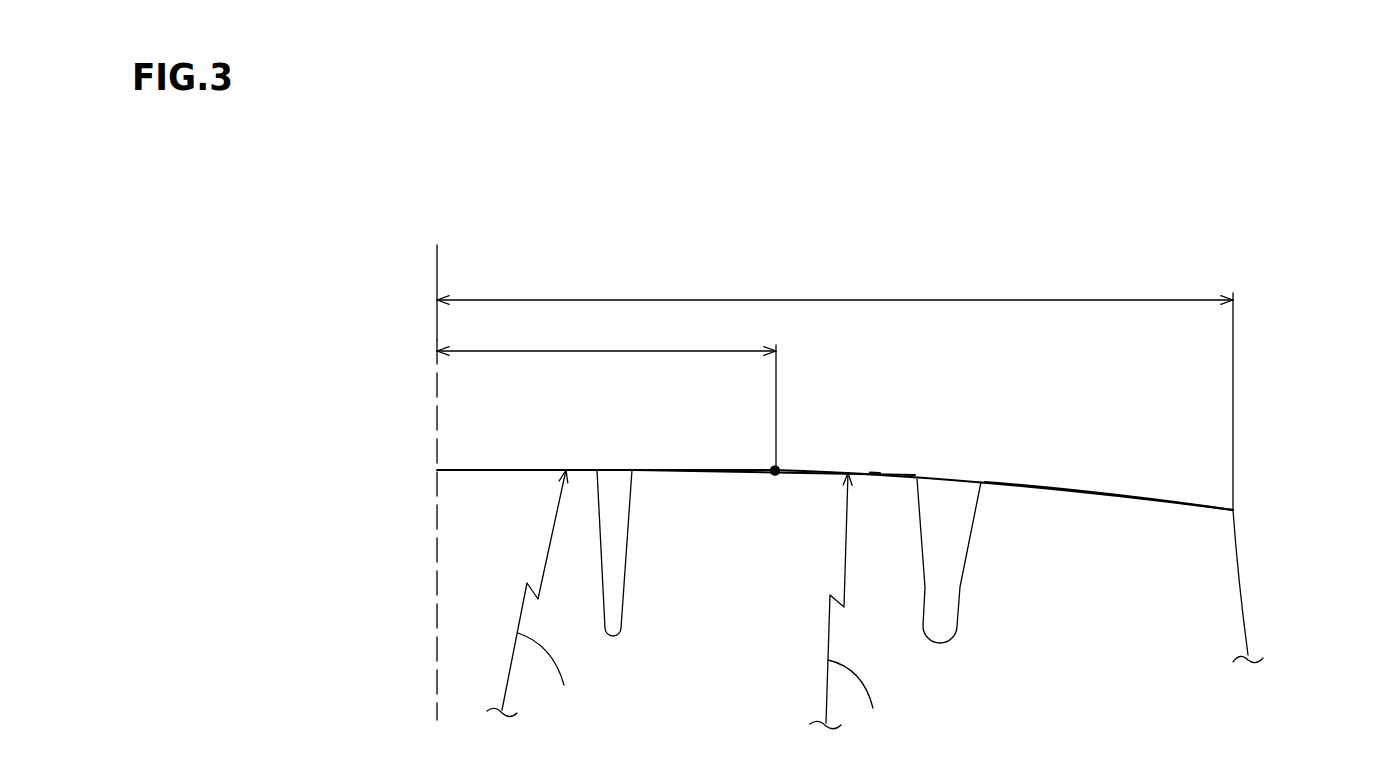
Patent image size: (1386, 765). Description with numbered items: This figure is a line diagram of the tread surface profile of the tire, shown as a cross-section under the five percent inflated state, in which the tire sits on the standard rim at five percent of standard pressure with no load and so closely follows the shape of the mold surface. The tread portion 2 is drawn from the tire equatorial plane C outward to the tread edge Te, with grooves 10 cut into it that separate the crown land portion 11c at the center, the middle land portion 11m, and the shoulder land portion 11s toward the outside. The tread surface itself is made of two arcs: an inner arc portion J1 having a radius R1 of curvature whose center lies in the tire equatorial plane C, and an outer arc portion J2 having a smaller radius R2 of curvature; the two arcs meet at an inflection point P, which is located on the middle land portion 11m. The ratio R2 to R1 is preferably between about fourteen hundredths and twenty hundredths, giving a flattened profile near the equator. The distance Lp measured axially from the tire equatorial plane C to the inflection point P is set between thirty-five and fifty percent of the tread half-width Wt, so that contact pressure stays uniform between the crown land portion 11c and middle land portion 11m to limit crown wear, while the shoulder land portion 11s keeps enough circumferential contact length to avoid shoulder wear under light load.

The tread portion 2 is at (1072, 458).
The groove 10 is at (613, 497).
The crown land portion 11c is at (510, 568).
The middle land portion 11m is at (803, 569).
The shoulder land portion 11s is at (1118, 580).
The tire equatorial plane C is at (437, 468).
The tread edge Te is at (1247, 507).
The tread half-width Wt is at (835, 389).
The distance Lp is at (606, 391).
The inflection point P is at (782, 462).
The inner arc portion J1 is at (515, 468).
The outer arc portion J2 is at (875, 473).
The radius of curvature R1 is at (536, 593).
The radius of curvature R2 is at (852, 606).